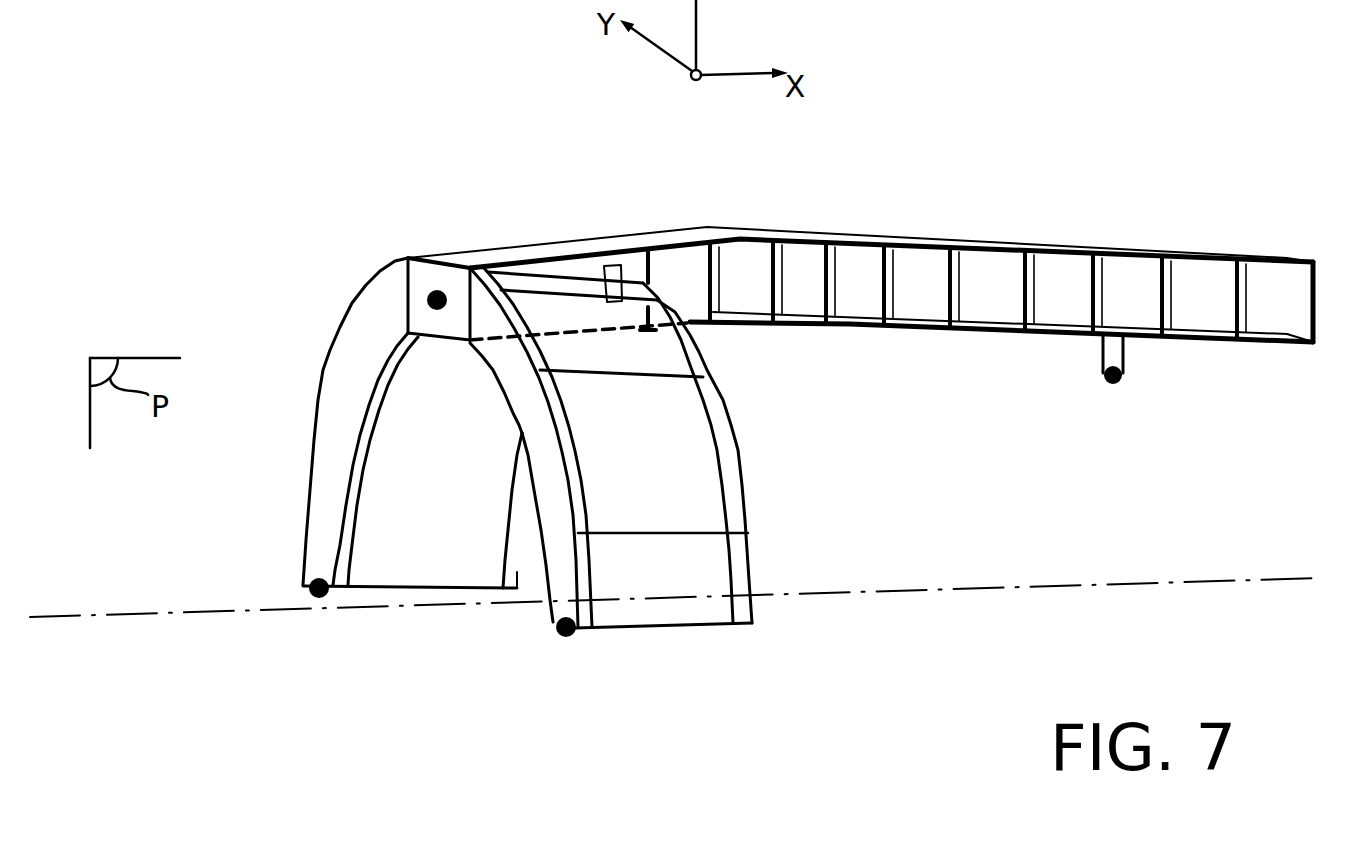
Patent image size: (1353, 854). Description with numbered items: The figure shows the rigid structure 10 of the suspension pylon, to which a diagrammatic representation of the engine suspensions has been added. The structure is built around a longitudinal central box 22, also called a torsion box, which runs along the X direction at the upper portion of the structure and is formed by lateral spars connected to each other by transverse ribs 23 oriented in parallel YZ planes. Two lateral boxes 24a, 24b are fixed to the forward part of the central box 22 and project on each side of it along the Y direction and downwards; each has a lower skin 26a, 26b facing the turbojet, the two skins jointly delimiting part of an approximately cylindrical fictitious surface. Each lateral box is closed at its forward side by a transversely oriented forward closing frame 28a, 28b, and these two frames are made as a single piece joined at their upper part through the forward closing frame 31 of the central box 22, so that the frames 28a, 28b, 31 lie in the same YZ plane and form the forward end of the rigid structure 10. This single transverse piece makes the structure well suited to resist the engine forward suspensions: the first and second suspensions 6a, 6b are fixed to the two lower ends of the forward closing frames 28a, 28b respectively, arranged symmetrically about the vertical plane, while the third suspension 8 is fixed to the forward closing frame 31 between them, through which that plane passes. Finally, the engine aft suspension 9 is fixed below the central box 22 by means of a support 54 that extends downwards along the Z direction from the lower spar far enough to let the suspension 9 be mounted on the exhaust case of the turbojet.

The rigid structure 10 is at (600, 190).
The longitudinal central box 22 is at (939, 228).
The transverse ribs 23 is at (933, 293).
The forward closing frame of the box 31 is at (420, 268).
The third engine forward suspension 8 is at (437, 310).
The engine aft suspension 9 is at (1120, 383).
The support 54 is at (1128, 347).
The lateral box 24a is at (760, 481).
The lateral box 24b is at (341, 302).
The forward closing frame 28a is at (538, 435).
The forward closing frame 28b is at (333, 402).
The lower skin 26a is at (548, 589).
The lower skin 26b is at (425, 540).
The first engine forward suspension 6a is at (574, 636).
The second engine forward suspension 6b is at (315, 598).